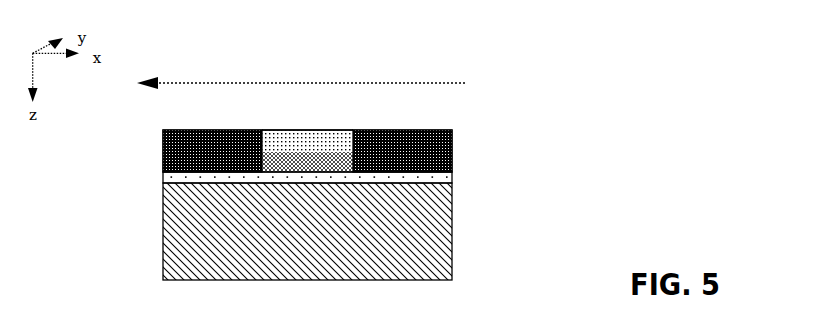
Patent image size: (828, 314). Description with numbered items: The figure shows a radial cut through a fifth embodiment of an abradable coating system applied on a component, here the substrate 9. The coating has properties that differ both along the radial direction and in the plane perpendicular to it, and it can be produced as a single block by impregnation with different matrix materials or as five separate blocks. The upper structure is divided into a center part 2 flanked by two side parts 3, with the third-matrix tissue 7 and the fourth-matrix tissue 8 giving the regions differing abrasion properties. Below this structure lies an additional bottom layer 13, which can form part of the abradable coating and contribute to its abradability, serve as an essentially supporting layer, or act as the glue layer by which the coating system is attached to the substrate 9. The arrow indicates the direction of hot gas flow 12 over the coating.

The center part 2 is at (273, 143).
The side part 3 is at (192, 130).
The tissue with matrix 3 7 is at (290, 138).
The tissue with matrix 4 8 is at (453, 157).
The substrate 9 is at (467, 227).
The direction of hot gas flow 12 is at (297, 83).
The additional bottom layer 13 is at (425, 178).